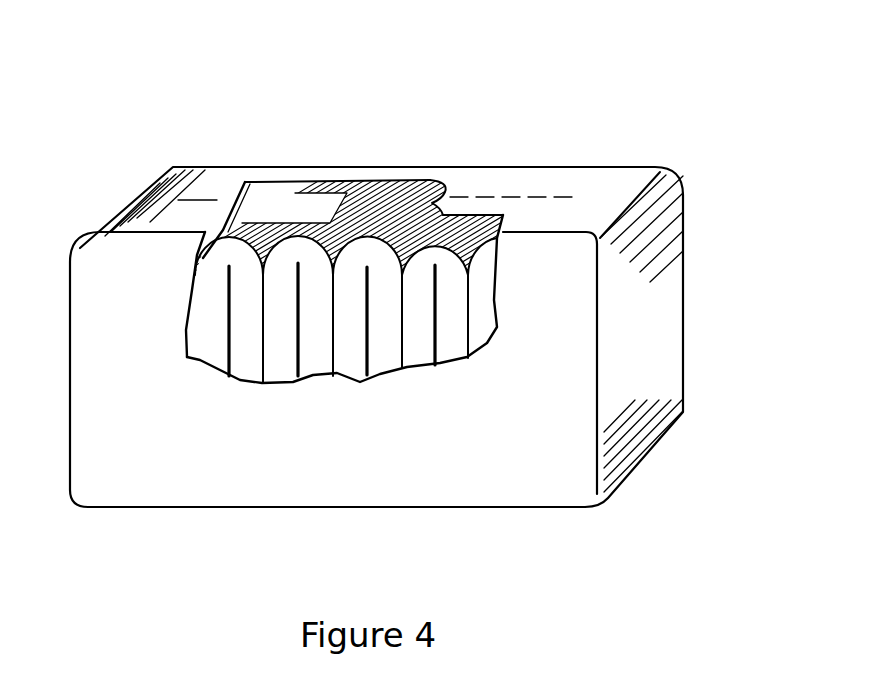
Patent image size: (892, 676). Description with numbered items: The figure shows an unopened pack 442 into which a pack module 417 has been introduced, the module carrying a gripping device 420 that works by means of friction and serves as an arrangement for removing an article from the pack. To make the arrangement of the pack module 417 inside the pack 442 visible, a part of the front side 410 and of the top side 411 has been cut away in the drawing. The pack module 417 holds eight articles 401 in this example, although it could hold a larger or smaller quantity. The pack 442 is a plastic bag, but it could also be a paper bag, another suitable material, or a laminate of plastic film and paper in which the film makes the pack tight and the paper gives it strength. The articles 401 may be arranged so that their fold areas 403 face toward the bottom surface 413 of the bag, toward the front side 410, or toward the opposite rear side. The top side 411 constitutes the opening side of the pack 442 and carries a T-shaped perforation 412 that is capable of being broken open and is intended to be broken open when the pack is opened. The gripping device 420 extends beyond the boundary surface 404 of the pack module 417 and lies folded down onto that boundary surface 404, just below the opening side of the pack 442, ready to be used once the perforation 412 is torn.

The article 401 is at (455, 327).
The fold area 403 is at (373, 247).
The boundary surface 404 is at (420, 193).
The front side 410 is at (240, 478).
The top side 411 is at (603, 183).
The T-shaped perforation 412 is at (167, 212).
The bottom surface 413 is at (310, 508).
The pack module 417 is at (233, 253).
The gripping device 420 is at (297, 203).
The pack 442 is at (658, 145).